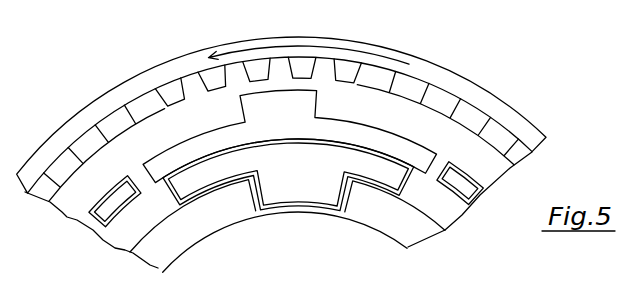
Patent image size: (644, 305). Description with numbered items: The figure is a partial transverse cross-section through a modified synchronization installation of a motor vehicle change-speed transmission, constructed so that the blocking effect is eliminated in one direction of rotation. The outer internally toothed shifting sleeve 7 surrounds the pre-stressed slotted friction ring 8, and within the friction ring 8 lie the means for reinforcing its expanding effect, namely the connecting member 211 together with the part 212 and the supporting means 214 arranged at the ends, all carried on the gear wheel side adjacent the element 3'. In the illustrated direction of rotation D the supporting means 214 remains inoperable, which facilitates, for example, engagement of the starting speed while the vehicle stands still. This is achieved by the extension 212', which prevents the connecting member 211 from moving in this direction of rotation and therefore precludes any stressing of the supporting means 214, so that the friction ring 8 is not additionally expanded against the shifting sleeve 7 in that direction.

The shifting sleeve 7 is at (488, 107).
The friction ring 8 is at (126, 169).
The direction of rotation D is at (277, 45).
The connecting member 211 is at (294, 131).
The pole shoe shell 212 is at (288, 175).
The extension 212' is at (204, 224).
The rotor ring 3' is at (287, 226).
The supporting means 214 is at (102, 214).